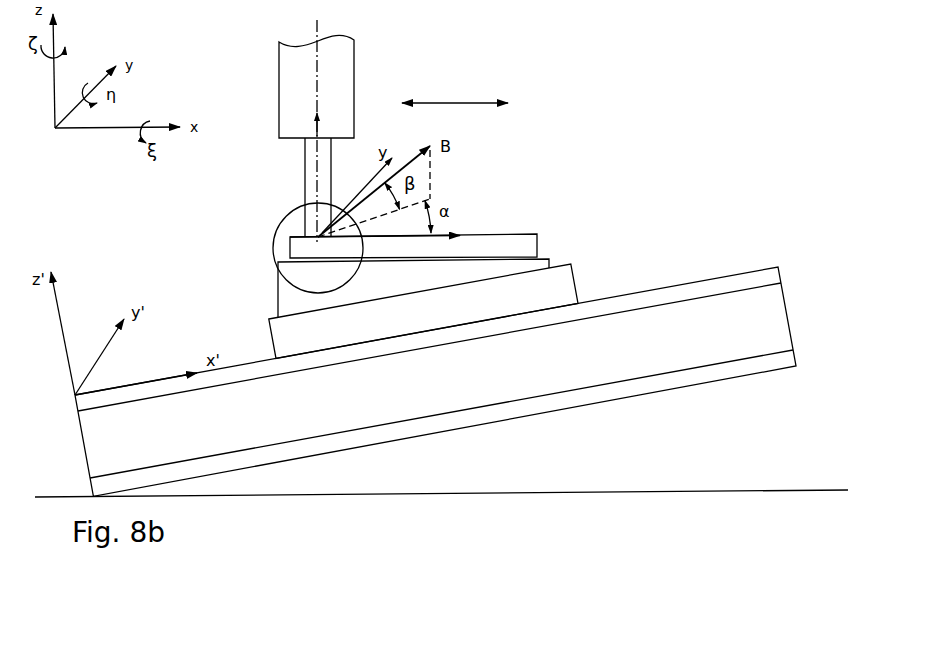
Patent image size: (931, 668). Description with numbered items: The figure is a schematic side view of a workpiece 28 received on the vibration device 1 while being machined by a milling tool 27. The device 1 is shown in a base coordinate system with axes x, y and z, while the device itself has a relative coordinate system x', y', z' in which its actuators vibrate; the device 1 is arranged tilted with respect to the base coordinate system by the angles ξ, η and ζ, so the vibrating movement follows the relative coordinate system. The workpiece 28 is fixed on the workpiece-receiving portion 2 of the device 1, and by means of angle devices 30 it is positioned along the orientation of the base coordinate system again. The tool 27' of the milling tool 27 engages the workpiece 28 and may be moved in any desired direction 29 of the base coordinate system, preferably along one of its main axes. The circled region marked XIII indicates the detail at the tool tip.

The device 1 is at (762, 250).
The workpiece-receiving portion 2 is at (550, 285).
The milling tool 27 is at (274, 121).
The tool 27' is at (257, 187).
The workpiece 28 is at (428, 198).
The desired direction 29 is at (453, 96).
The angle devices 30 is at (292, 287).
The detail region XIII is at (273, 247).